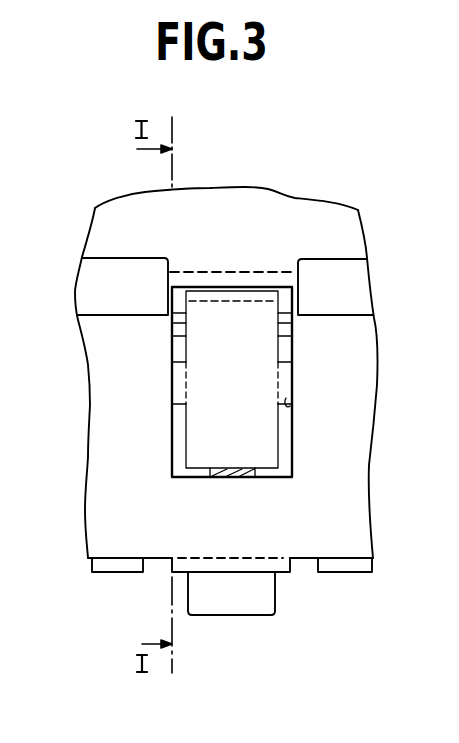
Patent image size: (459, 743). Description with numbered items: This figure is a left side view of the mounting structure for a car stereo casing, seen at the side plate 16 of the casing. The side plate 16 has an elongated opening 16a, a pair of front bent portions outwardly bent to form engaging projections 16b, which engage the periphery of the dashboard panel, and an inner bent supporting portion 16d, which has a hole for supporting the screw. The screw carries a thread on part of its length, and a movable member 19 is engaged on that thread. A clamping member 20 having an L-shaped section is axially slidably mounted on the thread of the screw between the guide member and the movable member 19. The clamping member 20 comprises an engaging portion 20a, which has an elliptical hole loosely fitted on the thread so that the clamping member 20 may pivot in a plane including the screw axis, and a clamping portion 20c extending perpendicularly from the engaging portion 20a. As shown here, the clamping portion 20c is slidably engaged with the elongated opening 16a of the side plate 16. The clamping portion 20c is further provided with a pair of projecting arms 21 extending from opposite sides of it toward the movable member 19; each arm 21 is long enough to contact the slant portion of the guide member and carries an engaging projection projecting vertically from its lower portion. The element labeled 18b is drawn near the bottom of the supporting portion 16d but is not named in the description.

The side plate 16 is at (90, 500).
The elongated opening 16a is at (285, 400).
The engaging projections 16b is at (132, 565).
The supporting portion 16d is at (278, 565).
The terminal tail 18b is at (220, 602).
The movable member 19 is at (178, 311).
The clamping member 20 is at (251, 423).
The engaging portion 20a is at (177, 287).
The clamping portion 20c is at (248, 361).
The projecting arms 21 is at (183, 376).